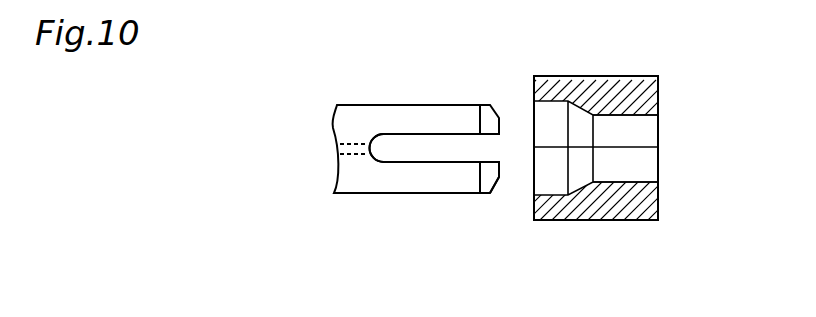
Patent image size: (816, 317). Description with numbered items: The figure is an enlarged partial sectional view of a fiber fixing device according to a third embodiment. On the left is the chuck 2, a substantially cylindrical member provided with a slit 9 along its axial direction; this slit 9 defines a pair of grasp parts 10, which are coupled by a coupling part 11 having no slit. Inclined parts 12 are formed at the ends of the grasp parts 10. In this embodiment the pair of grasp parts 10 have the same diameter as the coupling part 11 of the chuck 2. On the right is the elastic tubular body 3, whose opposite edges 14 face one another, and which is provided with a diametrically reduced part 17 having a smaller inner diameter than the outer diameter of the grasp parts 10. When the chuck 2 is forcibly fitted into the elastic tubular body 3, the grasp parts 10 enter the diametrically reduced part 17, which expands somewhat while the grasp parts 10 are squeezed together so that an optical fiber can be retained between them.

The chuck 2 is at (357, 187).
The elastic tubular body 3 is at (594, 148).
The slit 9 is at (400, 147).
The grasp parts 10 is at (450, 120).
The coupling part 11 is at (352, 125).
The inclined parts 12 is at (493, 189).
The opposite edges 14 is at (643, 137).
The diametrically reduced part 17 is at (605, 205).